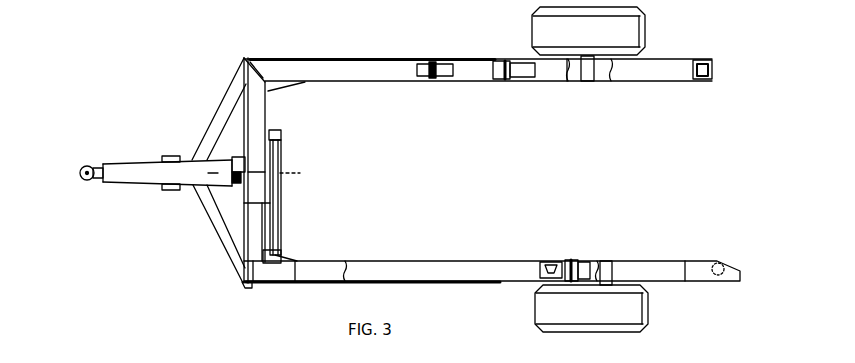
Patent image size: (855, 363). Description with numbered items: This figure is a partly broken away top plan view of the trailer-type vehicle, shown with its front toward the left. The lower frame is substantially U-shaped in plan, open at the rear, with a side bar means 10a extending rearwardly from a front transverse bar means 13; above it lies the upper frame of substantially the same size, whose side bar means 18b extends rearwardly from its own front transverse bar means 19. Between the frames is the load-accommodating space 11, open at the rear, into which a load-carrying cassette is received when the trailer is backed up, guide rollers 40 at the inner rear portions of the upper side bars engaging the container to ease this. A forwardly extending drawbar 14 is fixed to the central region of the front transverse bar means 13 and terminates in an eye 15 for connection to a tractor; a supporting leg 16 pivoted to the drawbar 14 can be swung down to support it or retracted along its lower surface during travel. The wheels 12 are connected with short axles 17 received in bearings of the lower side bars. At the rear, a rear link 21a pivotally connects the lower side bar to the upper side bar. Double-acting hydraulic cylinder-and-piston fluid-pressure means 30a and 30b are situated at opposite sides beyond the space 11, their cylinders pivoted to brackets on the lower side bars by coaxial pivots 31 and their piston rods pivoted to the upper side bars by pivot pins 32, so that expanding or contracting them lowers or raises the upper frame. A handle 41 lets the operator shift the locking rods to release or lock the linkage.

The side bar means 10a is at (380, 82).
The load-accommodating space 11 is at (495, 169).
The wheels 12 is at (645, 33).
The front transverse bar means 13 is at (258, 110).
The drawbar 14 is at (140, 183).
The eye 15 is at (88, 166).
The supporting leg 16 is at (170, 156).
The short axles 17 is at (588, 82).
The side bar means 18b is at (424, 260).
The front transverse bar means 19 is at (244, 218).
The rear link 21a is at (700, 80).
The fluid-pressure means 30a is at (452, 66).
The fluid-pressure means 30b is at (550, 262).
The pivots 31 is at (432, 62).
The pivot pin 32 is at (570, 261).
The guide rollers 40 is at (722, 258).
The handle 41 is at (231, 157).